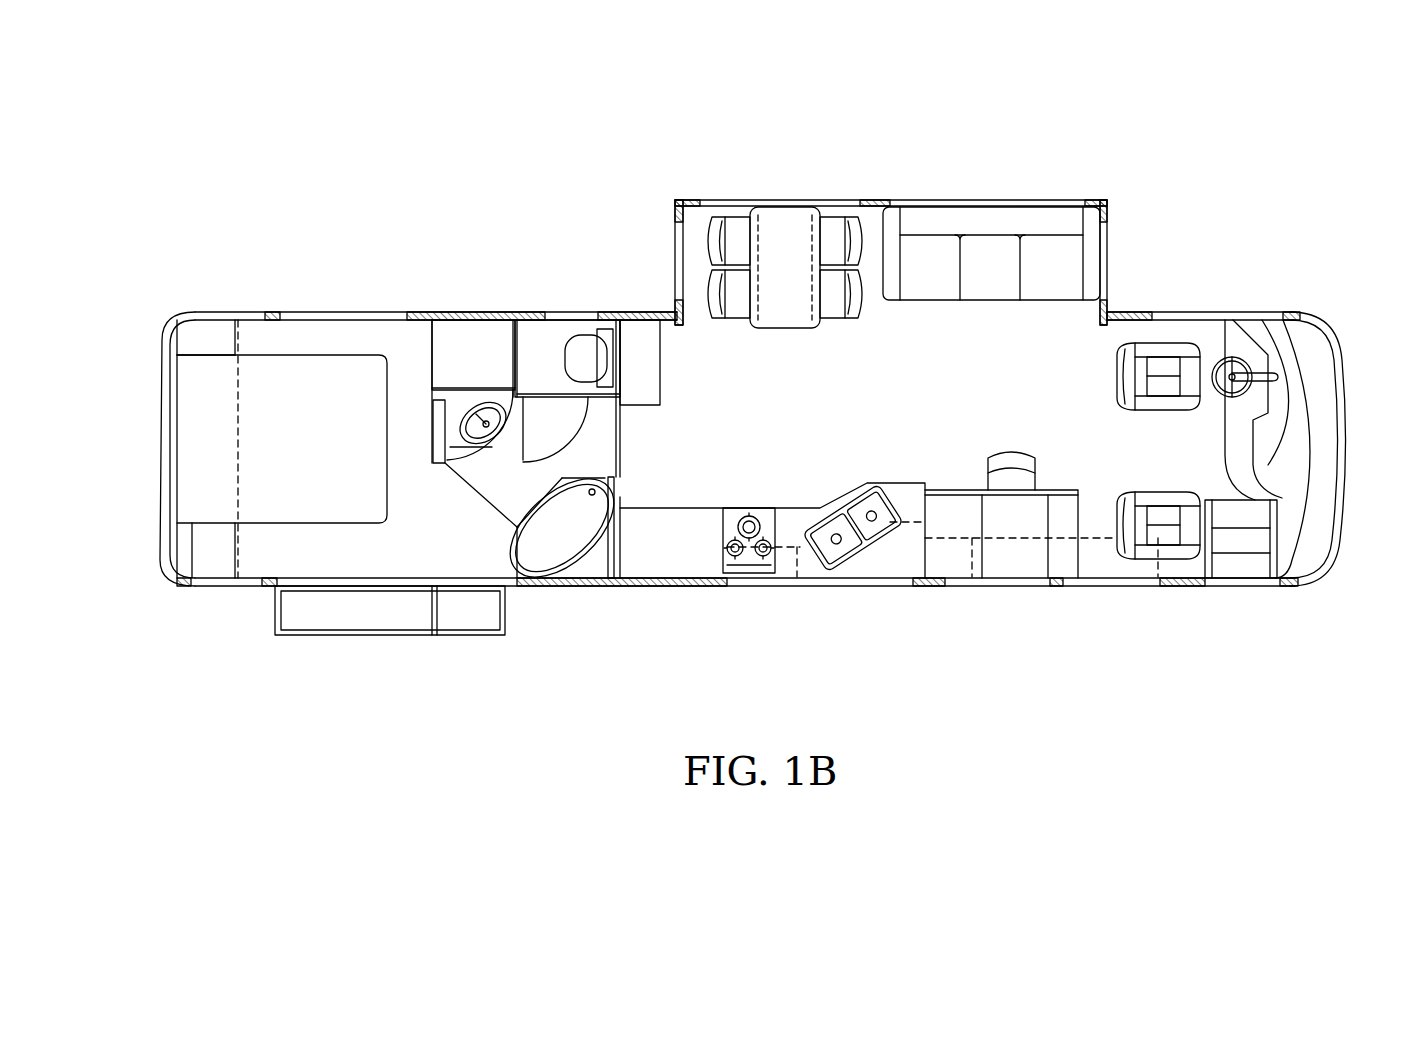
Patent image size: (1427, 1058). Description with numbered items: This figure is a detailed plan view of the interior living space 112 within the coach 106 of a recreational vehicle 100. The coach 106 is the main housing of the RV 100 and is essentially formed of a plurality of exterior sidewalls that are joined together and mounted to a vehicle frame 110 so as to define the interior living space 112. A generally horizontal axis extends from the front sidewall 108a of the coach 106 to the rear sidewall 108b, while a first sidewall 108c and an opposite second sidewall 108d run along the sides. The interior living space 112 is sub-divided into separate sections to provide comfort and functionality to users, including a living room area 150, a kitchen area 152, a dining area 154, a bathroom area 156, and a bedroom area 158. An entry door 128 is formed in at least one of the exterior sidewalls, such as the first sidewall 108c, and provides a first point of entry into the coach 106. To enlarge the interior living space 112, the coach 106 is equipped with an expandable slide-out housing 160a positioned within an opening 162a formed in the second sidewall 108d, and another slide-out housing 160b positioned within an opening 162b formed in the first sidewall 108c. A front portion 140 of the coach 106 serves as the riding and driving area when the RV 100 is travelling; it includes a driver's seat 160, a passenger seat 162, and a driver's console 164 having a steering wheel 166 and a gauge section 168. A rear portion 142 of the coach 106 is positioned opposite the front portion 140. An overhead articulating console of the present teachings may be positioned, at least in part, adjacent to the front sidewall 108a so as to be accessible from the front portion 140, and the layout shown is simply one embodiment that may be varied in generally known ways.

The recreational vehicle 100 is at (388, 125).
The coach 106 is at (490, 311).
The front sidewall 108a is at (1354, 481).
The rear sidewall 108b is at (146, 366).
The first sidewall 108c is at (650, 588).
The second sidewall 108d is at (447, 311).
The vehicle frame 110 is at (936, 453).
The interior living space 112 is at (785, 360).
The entry door 128 is at (1231, 581).
The front portion 140 is at (1211, 465).
The rear portion 142 is at (200, 458).
The living room area 150 is at (977, 324).
The kitchen area 152 is at (731, 455).
The dining area 154 is at (707, 324).
The bathroom area 156 is at (500, 487).
The bedroom area 158 is at (292, 334).
The driver's seat 160 is at (1120, 396).
The slide-out housing 160a is at (879, 197).
The slide-out housing 160b is at (385, 627).
The passenger seat 162 is at (1140, 505).
The opening 162a is at (908, 323).
The opening 162b is at (360, 552).
The driver's console 164 is at (1306, 375).
The steering wheel 166 is at (1236, 350).
The gauge section 168 is at (1281, 350).